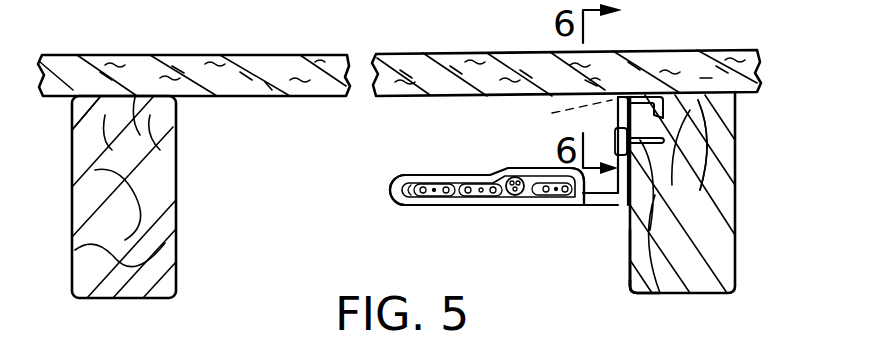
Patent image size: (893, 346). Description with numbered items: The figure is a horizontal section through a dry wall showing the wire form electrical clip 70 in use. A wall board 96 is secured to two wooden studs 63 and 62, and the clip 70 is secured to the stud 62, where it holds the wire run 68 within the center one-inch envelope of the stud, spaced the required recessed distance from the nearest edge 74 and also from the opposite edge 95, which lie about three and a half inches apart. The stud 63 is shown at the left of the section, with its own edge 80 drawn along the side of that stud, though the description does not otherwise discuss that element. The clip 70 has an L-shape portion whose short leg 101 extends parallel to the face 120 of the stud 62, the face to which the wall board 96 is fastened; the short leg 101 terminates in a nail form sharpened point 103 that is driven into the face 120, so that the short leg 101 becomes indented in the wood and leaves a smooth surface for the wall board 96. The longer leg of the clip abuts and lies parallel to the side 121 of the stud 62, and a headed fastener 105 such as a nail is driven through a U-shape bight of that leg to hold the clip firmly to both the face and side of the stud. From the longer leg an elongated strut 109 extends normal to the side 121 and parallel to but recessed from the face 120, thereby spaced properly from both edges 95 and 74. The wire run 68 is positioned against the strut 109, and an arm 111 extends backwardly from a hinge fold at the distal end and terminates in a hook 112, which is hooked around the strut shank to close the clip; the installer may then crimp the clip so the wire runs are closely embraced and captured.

The stud 62 is at (736, 183).
The stud 63 is at (176, 200).
The wire run 68 is at (505, 216).
The electrical clip 70 is at (481, 208).
The nearest edge 74 is at (566, 112).
The post edge 80 is at (70, 100).
The opposite edge 95 is at (631, 291).
The wall board 96 is at (428, 53).
The short leg 101 is at (636, 96).
The nail form sharpened point 103 is at (648, 108).
The headed fastener 105 is at (617, 143).
The elongated strut 109 is at (465, 207).
The arm 111 is at (462, 172).
The hook 112 is at (584, 208).
The face of the stud 120 is at (698, 100).
The side of the stud 121 is at (628, 253).